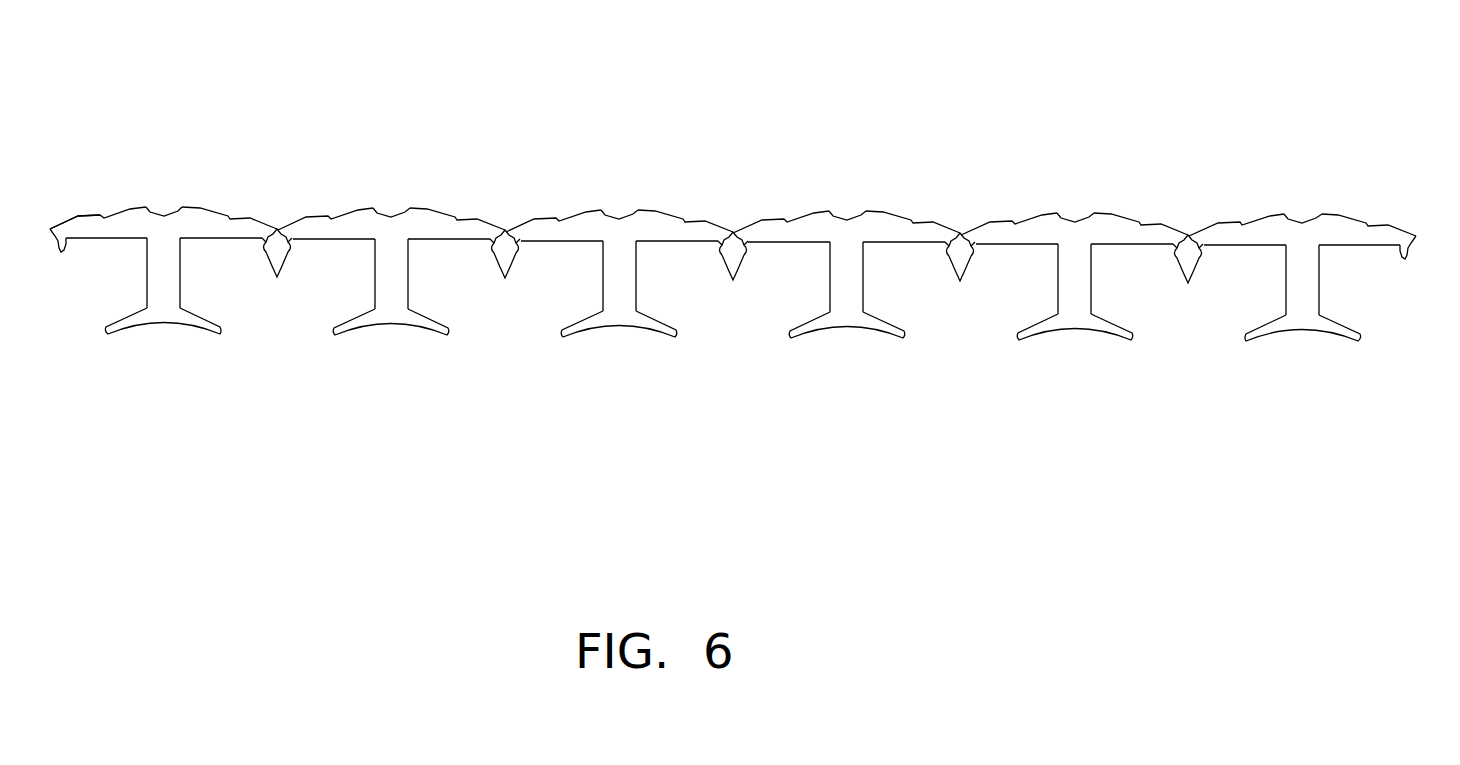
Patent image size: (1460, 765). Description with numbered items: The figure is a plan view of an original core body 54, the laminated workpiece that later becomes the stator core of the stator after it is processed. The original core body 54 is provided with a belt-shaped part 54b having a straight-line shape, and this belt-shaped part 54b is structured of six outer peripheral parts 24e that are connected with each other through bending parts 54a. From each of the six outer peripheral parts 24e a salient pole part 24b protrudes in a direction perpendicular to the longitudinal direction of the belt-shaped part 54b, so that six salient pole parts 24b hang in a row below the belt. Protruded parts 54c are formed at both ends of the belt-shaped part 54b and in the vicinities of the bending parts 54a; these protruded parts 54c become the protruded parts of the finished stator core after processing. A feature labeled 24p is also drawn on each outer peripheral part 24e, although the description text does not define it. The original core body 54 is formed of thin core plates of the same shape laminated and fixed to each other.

The original core body 54 is at (1340, 91).
The bending part 54a is at (276, 228).
The belt-shaped part 54b is at (83, 214).
The protruded part 54c is at (62, 256).
The recess 24p is at (162, 215).
The outer peripheral part 24e is at (204, 208).
The salient pole part 24b is at (164, 323).